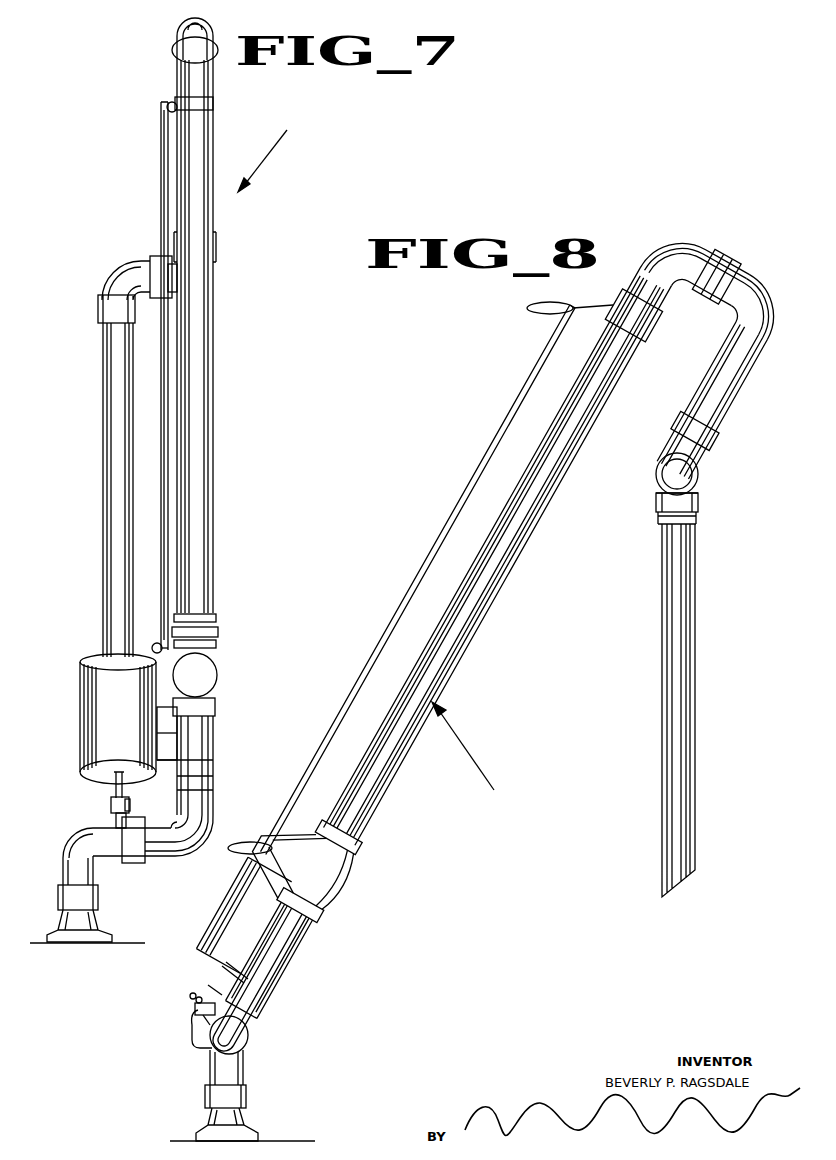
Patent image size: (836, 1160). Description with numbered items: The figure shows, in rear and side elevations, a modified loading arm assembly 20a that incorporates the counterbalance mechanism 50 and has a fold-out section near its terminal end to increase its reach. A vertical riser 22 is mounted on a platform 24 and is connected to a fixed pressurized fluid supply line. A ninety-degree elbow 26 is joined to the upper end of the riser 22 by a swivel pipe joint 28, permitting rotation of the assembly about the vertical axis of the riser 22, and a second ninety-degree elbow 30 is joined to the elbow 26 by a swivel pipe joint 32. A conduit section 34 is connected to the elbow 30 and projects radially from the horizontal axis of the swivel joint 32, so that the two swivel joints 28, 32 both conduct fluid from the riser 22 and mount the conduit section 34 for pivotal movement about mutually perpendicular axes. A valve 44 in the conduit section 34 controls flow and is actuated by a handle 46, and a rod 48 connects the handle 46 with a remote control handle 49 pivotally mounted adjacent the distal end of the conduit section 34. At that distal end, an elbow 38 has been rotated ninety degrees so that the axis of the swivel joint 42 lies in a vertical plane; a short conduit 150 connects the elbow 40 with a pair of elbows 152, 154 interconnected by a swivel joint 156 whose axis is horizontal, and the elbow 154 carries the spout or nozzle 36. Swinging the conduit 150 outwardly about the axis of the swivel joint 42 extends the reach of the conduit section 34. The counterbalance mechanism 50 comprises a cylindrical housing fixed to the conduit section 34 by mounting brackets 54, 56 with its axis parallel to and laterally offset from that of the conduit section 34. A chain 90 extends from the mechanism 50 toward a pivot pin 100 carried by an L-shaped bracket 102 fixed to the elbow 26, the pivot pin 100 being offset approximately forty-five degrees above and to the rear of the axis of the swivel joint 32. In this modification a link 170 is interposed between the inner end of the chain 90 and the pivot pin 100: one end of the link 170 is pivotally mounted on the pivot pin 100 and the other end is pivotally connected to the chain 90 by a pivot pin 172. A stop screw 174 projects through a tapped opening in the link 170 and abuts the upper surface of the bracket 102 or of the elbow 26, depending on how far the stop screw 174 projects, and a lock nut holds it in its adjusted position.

In FIG. 7, the loading arm assembly modification 20a is at (285, 154).
In FIG. 8, the loading arm assembly modification 20a is at (476, 757).
In FIG. 7, the riser 22 is at (100, 925).
In FIG. 8, the riser 22 is at (244, 1118).
In FIG. 7, the platform 24 is at (135, 943).
In FIG. 8, the platform 24 is at (303, 1141).
In FIG. 7, the elbow 26 is at (70, 845).
In FIG. 8, the elbow 26 is at (232, 1064).
In FIG. 7, the swivel pipe joint 28 is at (75, 897).
In FIG. 8, the swivel pipe joint 28 is at (230, 1098).
In FIG. 7, the second elbow 30 is at (180, 832).
In FIG. 8, the second elbow 30 is at (232, 1026).
In FIG. 7, the swivel pipe joint 32 is at (134, 863).
In FIG. 8, the swivel pipe joint 32 is at (247, 1044).
In FIG. 7, the conduit section 34 is at (187, 450).
In FIG. 8, the conduit section 34 is at (473, 595).
In FIG. 7, the spout 36 is at (115, 525).
In FIG. 8, the spout 36 is at (681, 711).
In FIG. 7, the elbow 38 is at (186, 30).
In FIG. 8, the elbow 38 is at (680, 252).
In FIG. 8, the elbow 40 is at (756, 292).
In FIG. 7, the swivel joint 42 is at (174, 53).
In FIG. 8, the swivel joint 42 is at (722, 268).
In FIG. 7, the valve 44 is at (199, 680).
In FIG. 8, the valve 44 is at (300, 901).
In FIG. 7, the handle 46 is at (158, 643).
In FIG. 8, the handle 46 is at (250, 843).
In FIG. 7, the rod 48 is at (161, 190).
In FIG. 8, the rod 48 is at (414, 590).
In FIG. 7, the remote control handle 49 is at (170, 103).
In FIG. 8, the remote control handle 49 is at (545, 306).
In FIG. 7, the counterbalance mechanism 50 is at (84, 688).
In FIG. 8, the counterbalance mechanism 50 is at (198, 938).
In FIG. 7, the mounting bracket 54 is at (176, 724).
In FIG. 7, the mounting bracket 56 is at (186, 769).
In FIG. 7, the chain 90 is at (115, 786).
In FIG. 8, the chain 90 is at (224, 968).
In FIG. 8, the pivot pin 100 is at (200, 1022).
In FIG. 7, the L-shaped bracket 102 is at (116, 822).
In FIG. 8, the L-shaped bracket 102 is at (200, 1040).
In FIG. 8, the short conduit 150 is at (706, 422).
In FIG. 7, the lower elbow 152 is at (216, 256).
In FIG. 8, the lower elbow 152 is at (690, 470).
In FIG. 7, the elbow 154 is at (120, 275).
In FIG. 8, the elbow 154 is at (699, 504).
In FIG. 7, the swivel joint 156 is at (158, 270).
In FIG. 8, the swivel joint 156 is at (699, 487).
In FIG. 7, the link 170 is at (111, 803).
In FIG. 8, the link 170 is at (195, 1014).
In FIG. 8, the pivot pin 172 is at (212, 992).
In FIG. 7, the stop screw 174 is at (130, 805).
In FIG. 8, the stop screw 174 is at (190, 998).